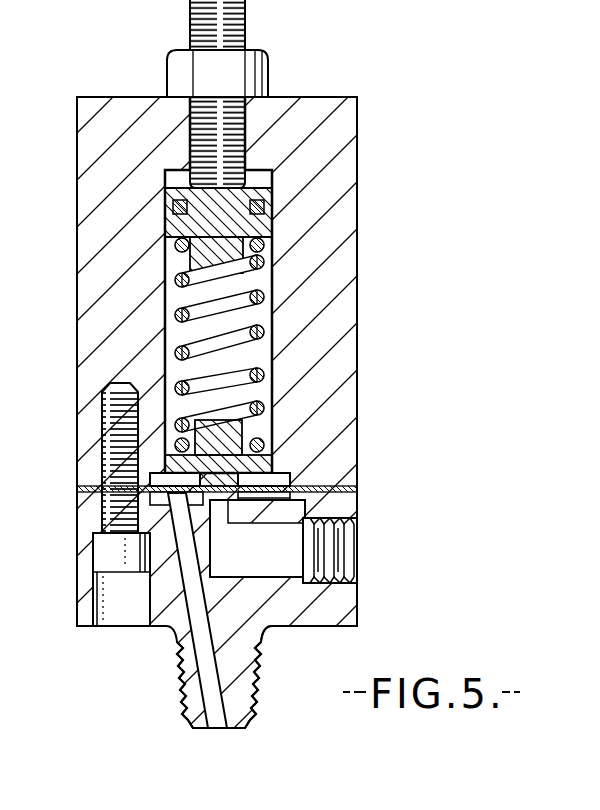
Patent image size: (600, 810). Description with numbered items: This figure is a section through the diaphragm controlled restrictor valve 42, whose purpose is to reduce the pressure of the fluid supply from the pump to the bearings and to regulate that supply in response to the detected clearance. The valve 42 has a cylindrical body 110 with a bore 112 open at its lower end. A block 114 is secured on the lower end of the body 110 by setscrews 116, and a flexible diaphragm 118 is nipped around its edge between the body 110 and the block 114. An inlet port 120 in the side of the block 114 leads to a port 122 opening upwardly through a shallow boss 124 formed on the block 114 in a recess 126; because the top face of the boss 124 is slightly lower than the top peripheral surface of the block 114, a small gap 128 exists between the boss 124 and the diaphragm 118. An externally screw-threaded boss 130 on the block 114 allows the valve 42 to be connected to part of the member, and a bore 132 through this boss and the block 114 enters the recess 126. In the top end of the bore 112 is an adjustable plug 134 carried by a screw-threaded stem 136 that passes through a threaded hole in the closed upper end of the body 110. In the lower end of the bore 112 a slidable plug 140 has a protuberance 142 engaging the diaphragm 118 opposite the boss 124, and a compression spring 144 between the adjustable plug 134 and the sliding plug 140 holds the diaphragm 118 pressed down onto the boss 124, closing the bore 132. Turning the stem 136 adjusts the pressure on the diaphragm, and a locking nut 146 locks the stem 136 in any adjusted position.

The diaphragm controlled restrictor valve 42 is at (228, 364).
The cylindrical body 110 is at (340, 183).
The bore 112 is at (293, 345).
The block 114 is at (317, 618).
The setscrews 116 is at (112, 557).
The flexible diaphragm 118 is at (138, 485).
The inlet port 120 is at (340, 552).
The port 122 is at (218, 510).
The shallow boss 124 is at (236, 507).
The recess 126 is at (157, 502).
The gap 128 is at (290, 494).
The externally screw-threaded boss 130 is at (237, 700).
The bore 132 is at (208, 672).
The adjustable plug 134 is at (262, 238).
The screw-threaded stem 136 is at (245, 150).
The slidable plug 140 is at (258, 462).
The protuberance 142 is at (262, 470).
The compression spring 144 is at (264, 376).
The locking nut 146 is at (262, 70).